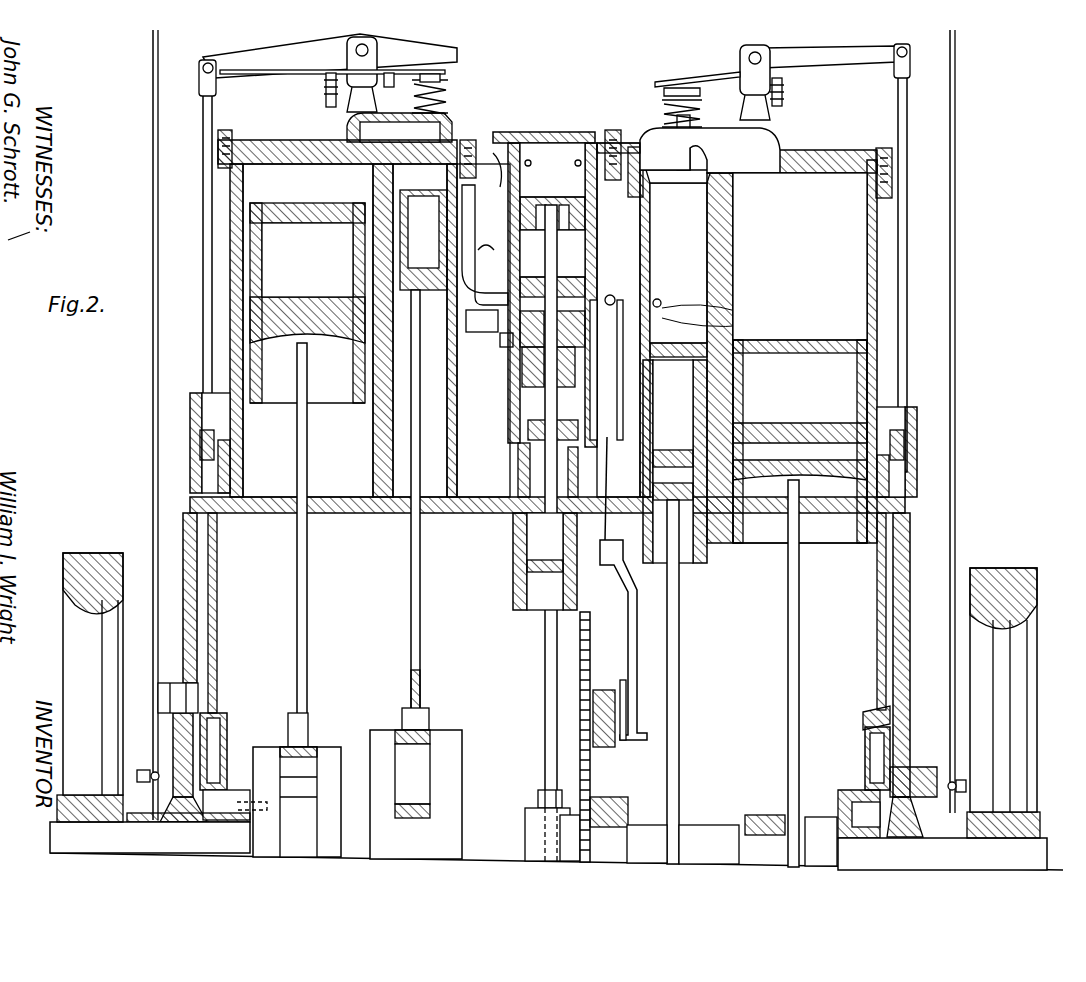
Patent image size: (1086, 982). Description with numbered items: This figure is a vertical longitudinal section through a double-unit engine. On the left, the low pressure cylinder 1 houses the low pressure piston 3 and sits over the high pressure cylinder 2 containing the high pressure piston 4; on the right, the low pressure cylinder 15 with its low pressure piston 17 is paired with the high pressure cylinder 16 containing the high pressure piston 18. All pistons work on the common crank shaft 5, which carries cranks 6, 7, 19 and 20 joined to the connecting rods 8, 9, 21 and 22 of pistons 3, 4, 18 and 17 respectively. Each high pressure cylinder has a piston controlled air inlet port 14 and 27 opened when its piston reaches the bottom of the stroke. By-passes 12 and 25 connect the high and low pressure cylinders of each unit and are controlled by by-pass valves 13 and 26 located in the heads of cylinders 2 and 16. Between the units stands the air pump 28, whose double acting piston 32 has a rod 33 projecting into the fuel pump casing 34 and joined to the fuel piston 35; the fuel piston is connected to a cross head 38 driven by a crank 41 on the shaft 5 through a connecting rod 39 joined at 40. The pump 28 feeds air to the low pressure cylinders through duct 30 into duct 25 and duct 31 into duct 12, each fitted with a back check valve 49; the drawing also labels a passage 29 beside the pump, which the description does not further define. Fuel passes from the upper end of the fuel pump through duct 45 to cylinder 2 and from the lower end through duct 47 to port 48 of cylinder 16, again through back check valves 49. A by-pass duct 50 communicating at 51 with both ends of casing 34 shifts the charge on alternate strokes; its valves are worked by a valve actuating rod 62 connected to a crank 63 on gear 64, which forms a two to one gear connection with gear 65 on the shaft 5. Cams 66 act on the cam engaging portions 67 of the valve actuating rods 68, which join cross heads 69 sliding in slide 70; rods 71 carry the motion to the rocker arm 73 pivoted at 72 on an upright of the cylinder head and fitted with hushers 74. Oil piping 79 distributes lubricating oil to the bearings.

The low pressure cylinder 1 is at (307, 289).
The high pressure cylinder 2 is at (500, 458).
The low pressure piston 3 is at (307, 260).
The high pressure piston 4 is at (425, 330).
The crank shaft 5 is at (548, 711).
The crank 6 is at (297, 802).
The crank 7 is at (416, 794).
The connecting rod 8 is at (300, 616).
The connecting rod 9 is at (420, 614).
The by-pass 12 is at (392, 112).
The by-pass valve 13 is at (337, 313).
The air inlet port 14 is at (487, 347).
The low pressure cylinder 15 is at (800, 256).
The high pressure cylinder 16 is at (769, 351).
The low pressure piston 17 is at (800, 441).
The high pressure piston 18 is at (675, 461).
The crank 19 is at (660, 838).
The crank 20 is at (815, 830).
The connecting rod 21 is at (679, 780).
The connecting rod 22 is at (795, 612).
The by-pass 25 is at (758, 150).
The by-pass valve 26 is at (675, 292).
The air inlet port 27 is at (678, 345).
The pump 28 is at (566, 314).
The port 29 is at (598, 270).
The duct 30 is at (600, 135).
The duct 31 is at (491, 237).
The pump piston 32 is at (552, 202).
The piston rod 33 is at (565, 262).
The fuel pump casing 34 is at (523, 378).
The fuel piston 35 is at (508, 367).
The cross head 38 is at (513, 540).
The connecting rod 39 is at (545, 702).
The joint 40 is at (536, 792).
The crank 41 is at (525, 815).
The fuel duct 45 is at (485, 245).
The duct 47 is at (761, 301).
The port 48 is at (672, 298).
The back check valve 49 is at (490, 114).
The by-pass duct 50 is at (761, 318).
The by-pass duct connection 51 is at (565, 363).
The valve actuating rod 62 is at (621, 488).
The crank 63 is at (622, 683).
The gear 64 is at (590, 640).
The gear 65 is at (571, 821).
The cam 66 is at (232, 744).
The cam engaging portion 67 is at (524, 705).
The valve actuating rod 68 is at (208, 590).
The cross head 69 is at (550, 457).
The slide 70 is at (190, 450).
The rod 71 is at (203, 283).
The pivot 72 is at (579, 78).
The rocker arm 73 is at (554, 65).
The husher 74 is at (445, 72).
The oil piping 79 is at (152, 118).